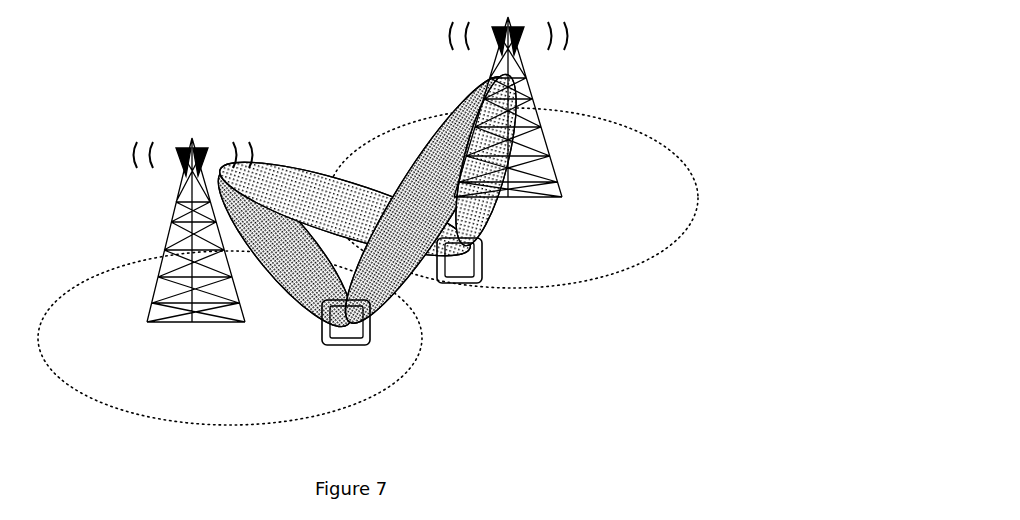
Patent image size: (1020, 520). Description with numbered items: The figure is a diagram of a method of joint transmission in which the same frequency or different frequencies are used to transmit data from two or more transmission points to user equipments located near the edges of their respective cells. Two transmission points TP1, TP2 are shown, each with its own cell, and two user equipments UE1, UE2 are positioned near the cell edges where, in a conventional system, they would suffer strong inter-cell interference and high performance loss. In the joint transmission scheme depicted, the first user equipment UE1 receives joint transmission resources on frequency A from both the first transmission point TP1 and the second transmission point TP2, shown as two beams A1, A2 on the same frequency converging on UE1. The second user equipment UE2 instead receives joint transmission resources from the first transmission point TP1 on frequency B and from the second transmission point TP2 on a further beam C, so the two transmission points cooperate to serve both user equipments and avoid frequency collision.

The transmission point TP1 is at (187, 230).
The transmission point TP2 is at (512, 107).
The user equipment UE1 is at (344, 341).
The user equipment UE2 is at (479, 260).
The frequency A beam from TP1 A1 is at (284, 248).
The frequency A beam from TP2 A2 is at (425, 200).
The frequency B is at (345, 208).
The frequency C beam C is at (485, 159).